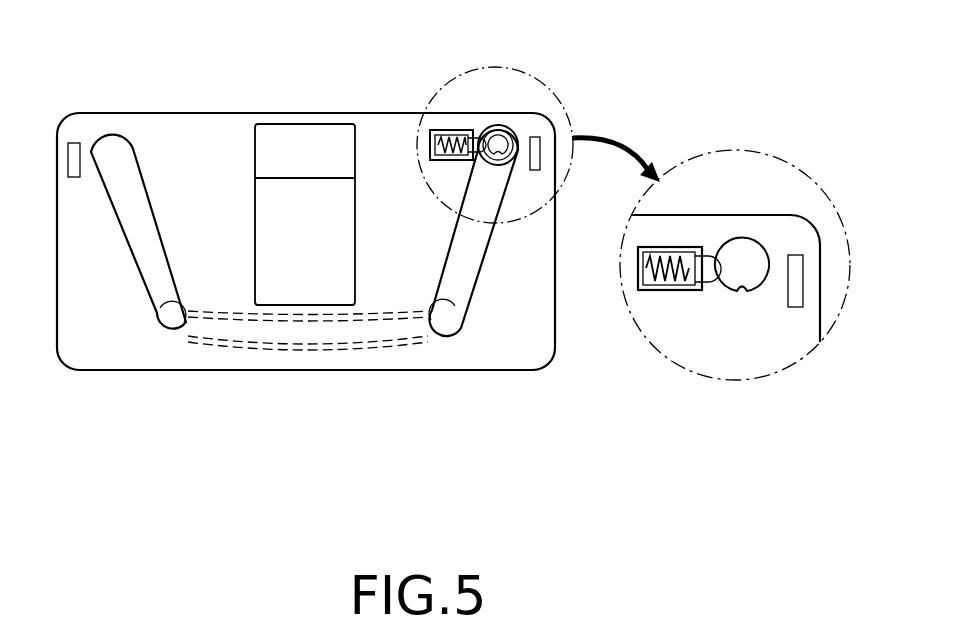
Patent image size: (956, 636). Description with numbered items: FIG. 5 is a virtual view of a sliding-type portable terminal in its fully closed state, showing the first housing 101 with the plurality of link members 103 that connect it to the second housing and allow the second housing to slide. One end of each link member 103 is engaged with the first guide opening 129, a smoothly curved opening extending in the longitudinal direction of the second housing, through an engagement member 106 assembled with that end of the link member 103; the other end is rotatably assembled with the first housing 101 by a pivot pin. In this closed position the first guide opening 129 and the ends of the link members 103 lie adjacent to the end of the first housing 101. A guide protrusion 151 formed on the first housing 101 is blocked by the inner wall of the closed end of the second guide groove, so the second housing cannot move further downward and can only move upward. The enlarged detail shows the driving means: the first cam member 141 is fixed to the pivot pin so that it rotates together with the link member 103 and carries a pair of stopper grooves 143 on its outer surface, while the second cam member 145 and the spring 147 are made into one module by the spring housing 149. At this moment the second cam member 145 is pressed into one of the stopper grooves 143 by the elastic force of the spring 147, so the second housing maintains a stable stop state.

The first housing 101 is at (149, 110).
The link members 103 is at (138, 298).
The engagement member 106 is at (176, 336).
The first guide opening 129 is at (300, 336).
The guide protrusion 151 is at (540, 128).
The first cam member 141 is at (750, 252).
The stopper grooves 143 is at (742, 293).
The second cam member 145 is at (686, 256).
The spring 147 is at (663, 264).
The spring housing 149 is at (670, 291).